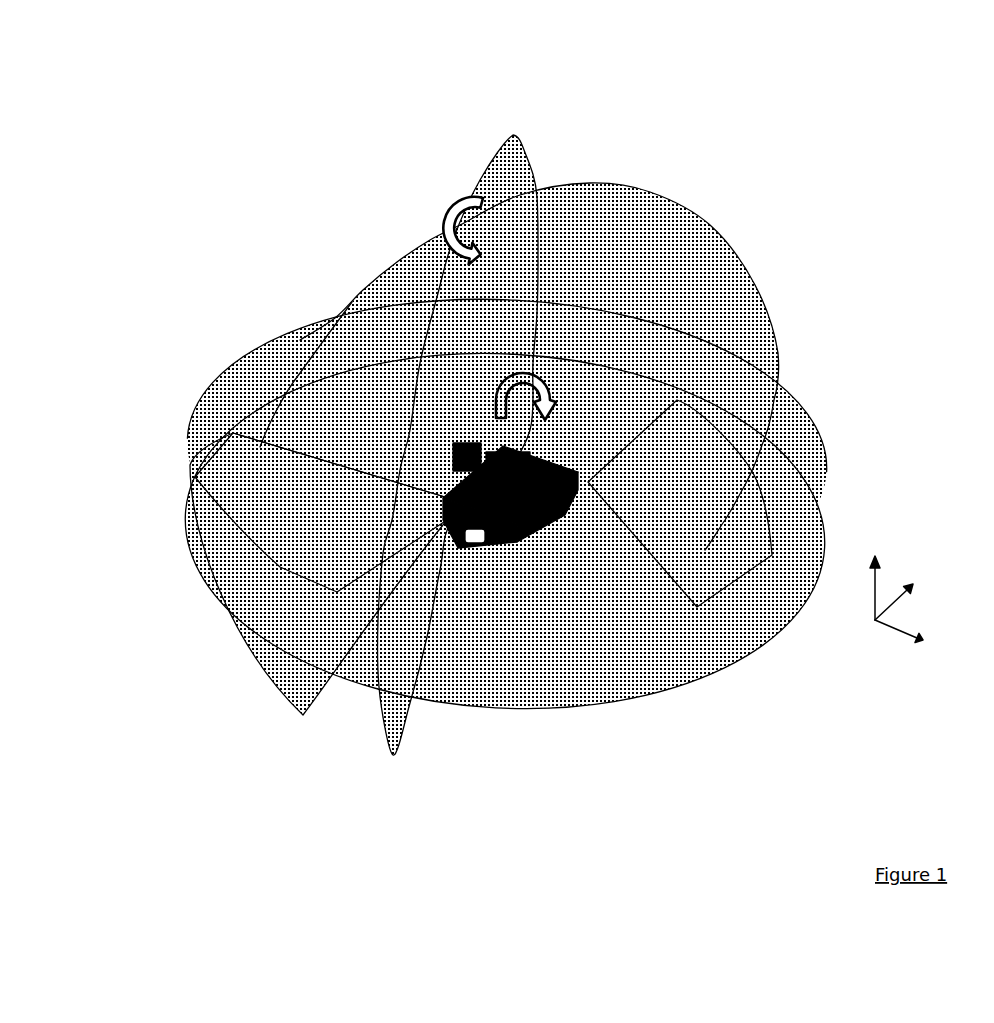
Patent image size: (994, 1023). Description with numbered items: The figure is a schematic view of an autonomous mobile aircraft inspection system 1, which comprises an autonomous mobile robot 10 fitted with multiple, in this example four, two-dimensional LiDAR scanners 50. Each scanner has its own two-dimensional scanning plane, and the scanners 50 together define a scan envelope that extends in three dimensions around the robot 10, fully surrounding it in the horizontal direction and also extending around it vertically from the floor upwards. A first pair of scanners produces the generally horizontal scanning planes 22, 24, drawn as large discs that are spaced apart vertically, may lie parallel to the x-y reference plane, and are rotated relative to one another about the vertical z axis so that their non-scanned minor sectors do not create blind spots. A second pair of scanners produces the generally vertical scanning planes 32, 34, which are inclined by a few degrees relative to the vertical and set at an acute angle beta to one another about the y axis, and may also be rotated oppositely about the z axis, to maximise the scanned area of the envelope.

The autonomous mobile aircraft inspection system 1 is at (177, 78).
The autonomous mobile robot 10 is at (488, 508).
The scanning plane 22 is at (217, 567).
The scanning plane 24 is at (228, 415).
The scanning plane 32 is at (497, 173).
The scanning plane 34 is at (608, 220).
The two-dimensional LiDAR scanner 50 is at (486, 478).